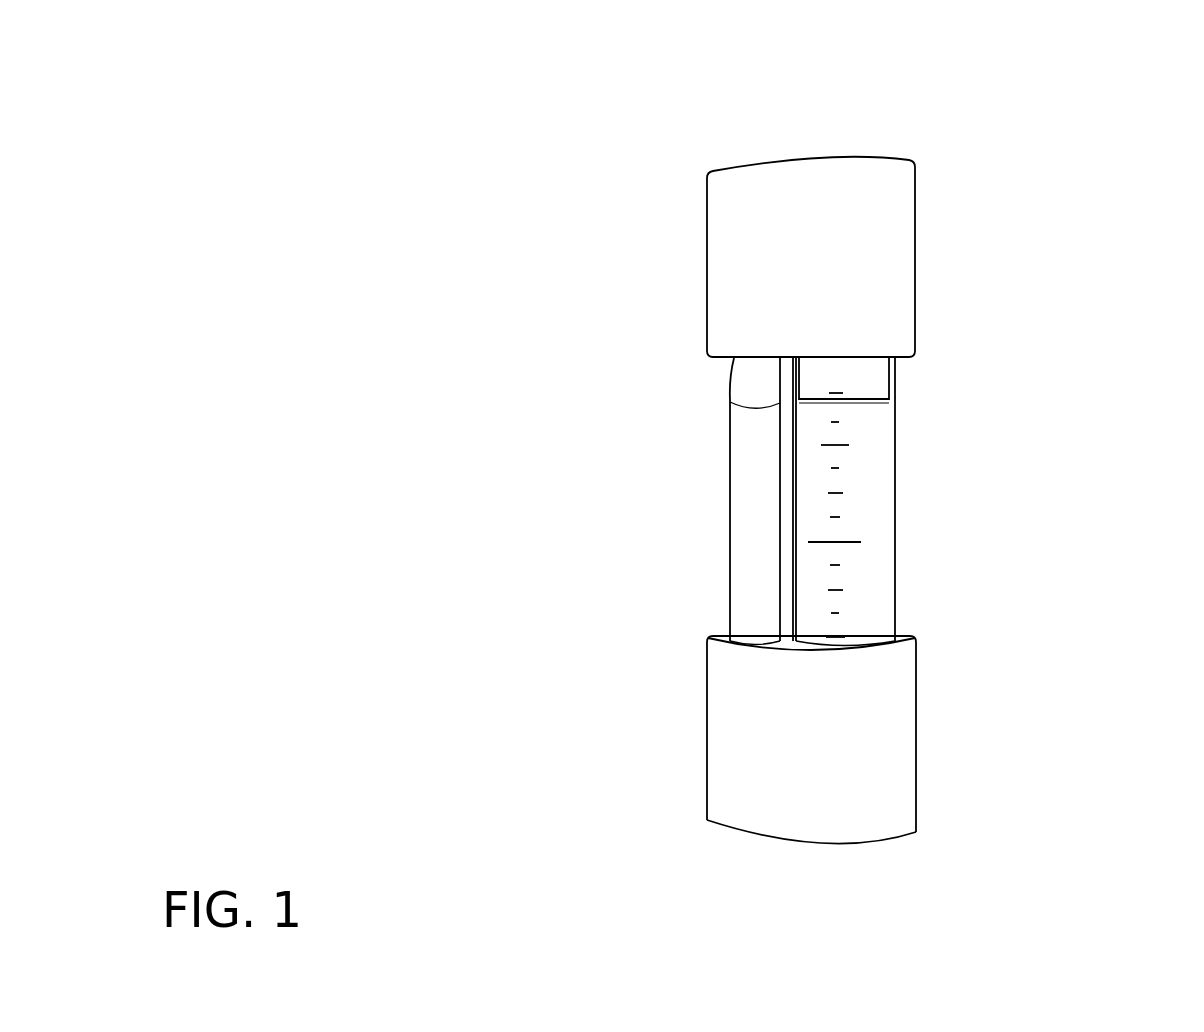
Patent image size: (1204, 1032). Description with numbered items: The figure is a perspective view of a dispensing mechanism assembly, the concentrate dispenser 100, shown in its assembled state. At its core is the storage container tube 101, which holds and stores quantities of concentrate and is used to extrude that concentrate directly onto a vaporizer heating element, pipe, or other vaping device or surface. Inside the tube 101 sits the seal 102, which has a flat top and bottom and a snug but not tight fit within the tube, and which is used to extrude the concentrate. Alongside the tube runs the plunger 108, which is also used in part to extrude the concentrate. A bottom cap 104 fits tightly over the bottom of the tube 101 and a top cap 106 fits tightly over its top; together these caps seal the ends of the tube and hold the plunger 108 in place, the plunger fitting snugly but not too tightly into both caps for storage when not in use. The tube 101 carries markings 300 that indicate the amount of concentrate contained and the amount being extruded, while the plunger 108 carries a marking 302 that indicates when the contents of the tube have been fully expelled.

The concentrate dispenser 100 is at (913, 112).
The storage container tube 101 is at (895, 540).
The seal 102 is at (877, 383).
The bottom cap 104 is at (707, 732).
The top cap 106 is at (703, 263).
The plunger 108 is at (728, 488).
The markings 300 is at (840, 638).
The marking 302 is at (740, 407).